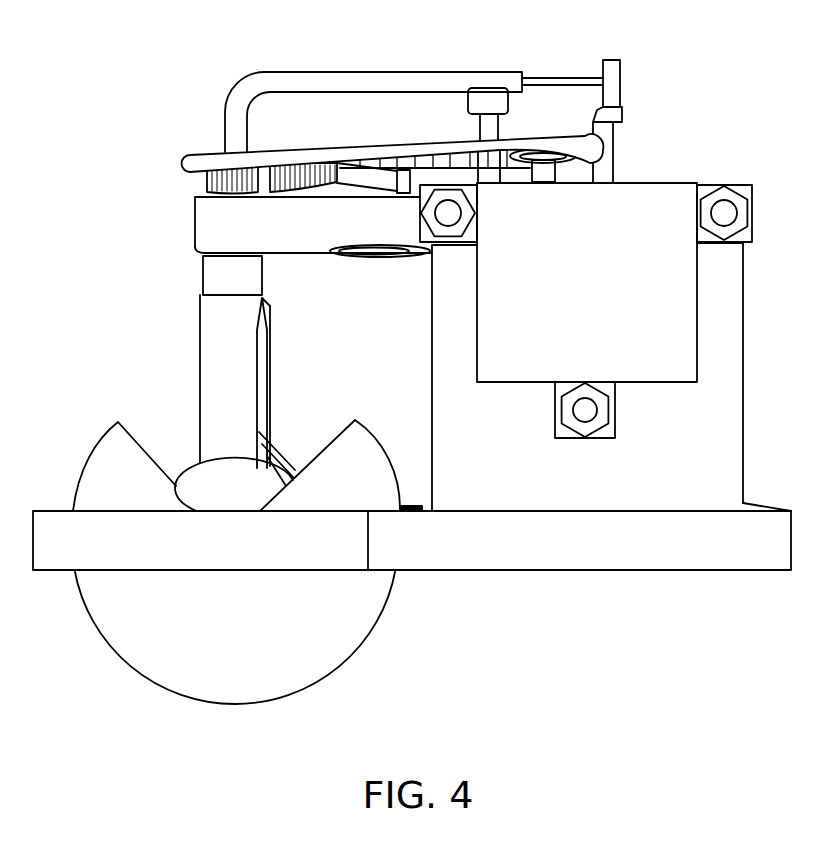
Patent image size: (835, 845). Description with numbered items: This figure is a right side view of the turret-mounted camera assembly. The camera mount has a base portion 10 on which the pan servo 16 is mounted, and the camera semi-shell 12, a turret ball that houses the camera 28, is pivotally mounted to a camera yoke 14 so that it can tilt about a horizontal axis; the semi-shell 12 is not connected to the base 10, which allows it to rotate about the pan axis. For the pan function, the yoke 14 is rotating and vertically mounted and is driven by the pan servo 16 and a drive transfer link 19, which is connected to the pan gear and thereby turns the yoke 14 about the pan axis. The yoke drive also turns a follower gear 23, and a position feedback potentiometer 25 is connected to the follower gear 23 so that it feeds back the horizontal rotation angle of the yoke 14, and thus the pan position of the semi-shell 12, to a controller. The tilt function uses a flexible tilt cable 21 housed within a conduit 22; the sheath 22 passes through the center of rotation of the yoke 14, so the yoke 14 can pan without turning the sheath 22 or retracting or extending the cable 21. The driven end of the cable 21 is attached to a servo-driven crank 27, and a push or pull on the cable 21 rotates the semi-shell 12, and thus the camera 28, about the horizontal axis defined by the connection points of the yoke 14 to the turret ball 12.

The base portion 10 is at (605, 555).
The camera semi-shell 12 is at (300, 677).
The camera yoke 14 is at (213, 320).
The pan servo 16 is at (670, 335).
The drive transfer link 19 is at (207, 160).
The tilt cable 21 is at (558, 82).
The conduit 22 is at (380, 80).
The follower gear 23 is at (203, 187).
The position feedback potentiometer 25 is at (372, 252).
The crank 27 is at (620, 118).
The camera 28 is at (102, 665).